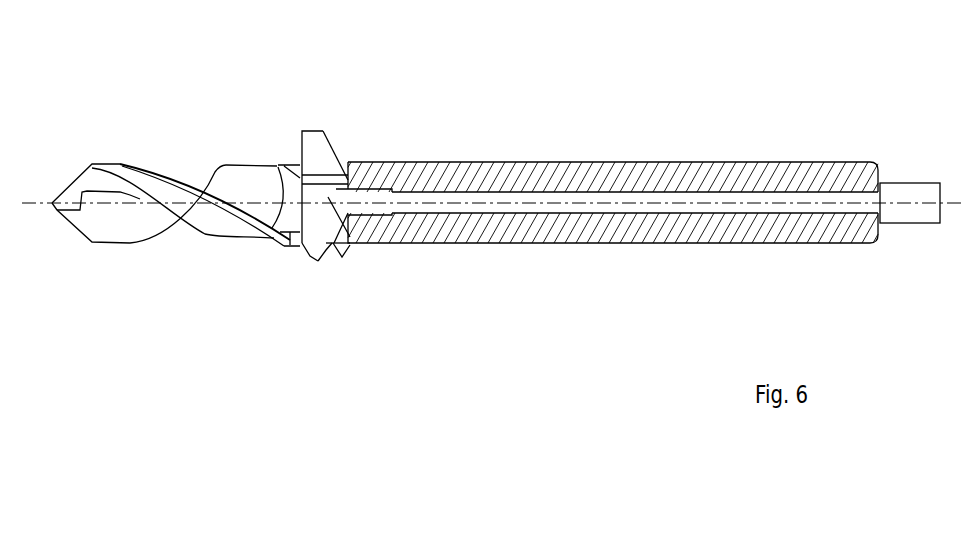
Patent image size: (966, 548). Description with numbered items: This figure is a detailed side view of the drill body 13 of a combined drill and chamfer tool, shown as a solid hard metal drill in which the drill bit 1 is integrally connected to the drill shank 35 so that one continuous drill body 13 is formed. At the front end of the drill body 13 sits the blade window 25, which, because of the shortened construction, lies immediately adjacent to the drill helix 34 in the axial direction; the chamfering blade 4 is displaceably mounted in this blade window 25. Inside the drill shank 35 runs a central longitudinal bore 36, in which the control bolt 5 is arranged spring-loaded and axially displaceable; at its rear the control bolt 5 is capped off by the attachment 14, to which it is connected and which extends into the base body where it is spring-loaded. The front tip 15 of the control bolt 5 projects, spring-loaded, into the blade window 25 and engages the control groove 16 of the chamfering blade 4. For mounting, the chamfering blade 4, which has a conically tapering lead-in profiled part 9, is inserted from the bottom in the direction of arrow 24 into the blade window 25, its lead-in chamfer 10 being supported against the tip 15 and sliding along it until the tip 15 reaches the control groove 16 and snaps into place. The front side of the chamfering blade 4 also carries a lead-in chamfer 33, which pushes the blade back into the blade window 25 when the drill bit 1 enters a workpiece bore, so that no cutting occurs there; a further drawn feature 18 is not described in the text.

The drill bit 1 is at (143, 182).
The chamfering blade 4 is at (321, 260).
The control bolt 5 is at (710, 192).
The lead-in profiled part 9 is at (312, 150).
The lead-in chamfer 10 is at (337, 148).
The drill body 13 is at (498, 97).
The attachment 14 is at (900, 190).
The tip 15 is at (347, 190).
The control groove 16 is at (317, 254).
The cutting tooth 18 is at (347, 253).
The arrow 24 is at (327, 337).
The blade window 25 is at (252, 231).
The lead-in chamfer 33 is at (300, 252).
The drill helix 34 is at (262, 165).
The drill shank 35 is at (620, 173).
The longitudinal bore 36 is at (555, 183).